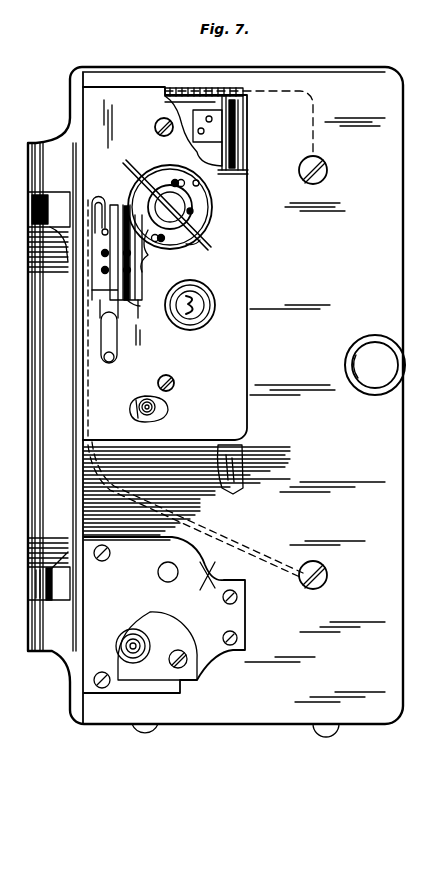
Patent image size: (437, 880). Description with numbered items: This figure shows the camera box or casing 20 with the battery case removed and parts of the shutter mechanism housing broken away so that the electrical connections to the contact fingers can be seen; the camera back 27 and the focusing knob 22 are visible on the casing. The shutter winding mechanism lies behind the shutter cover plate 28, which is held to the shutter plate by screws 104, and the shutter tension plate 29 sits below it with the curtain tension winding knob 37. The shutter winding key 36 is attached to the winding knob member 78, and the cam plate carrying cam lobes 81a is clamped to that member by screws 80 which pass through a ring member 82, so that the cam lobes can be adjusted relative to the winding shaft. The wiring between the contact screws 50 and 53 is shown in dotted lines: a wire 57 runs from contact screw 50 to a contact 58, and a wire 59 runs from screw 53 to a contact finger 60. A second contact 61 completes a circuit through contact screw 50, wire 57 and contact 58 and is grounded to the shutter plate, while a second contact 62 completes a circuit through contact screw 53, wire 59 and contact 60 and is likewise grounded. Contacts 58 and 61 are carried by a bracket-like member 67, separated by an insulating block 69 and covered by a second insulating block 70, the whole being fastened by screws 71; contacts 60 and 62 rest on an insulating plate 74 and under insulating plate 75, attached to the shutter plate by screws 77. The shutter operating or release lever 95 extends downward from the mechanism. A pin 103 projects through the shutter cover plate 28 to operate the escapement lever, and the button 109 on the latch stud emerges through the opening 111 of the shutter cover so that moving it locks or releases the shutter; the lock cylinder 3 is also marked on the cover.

The lock cylinder 3 is at (186, 431).
The camera box or casing 20 is at (129, 74).
The focusing knob 22 is at (376, 378).
The camera back 27 is at (40, 248).
The shutter cover plate 28 is at (84, 94).
The shutter tension plate 29 is at (164, 615).
The shutter winding key 36 is at (128, 176).
The curtain tension winding knob 37 is at (133, 630).
The contact screw 50 is at (327, 168).
The contact screw 53 is at (327, 573).
The wire 57 is at (318, 103).
The contact 58 is at (238, 150).
The wire 59 is at (86, 200).
The contact finger 60 is at (100, 296).
The second contact 61 is at (210, 154).
The second contact 62 is at (145, 311).
The bracket-like member 67 is at (198, 128).
The insulating block 69 is at (246, 160).
The second insulating block 70 is at (240, 104).
The screws 71 is at (240, 118).
The insulating plate 74 is at (130, 333).
The insulating plate 75 is at (108, 282).
The screws 77 is at (150, 282).
The winding knob member 78 is at (205, 232).
The screws 80 is at (168, 211).
The cam lobes or swells 81a is at (198, 183).
The ring member 82 is at (196, 214).
The shutter operating or release lever 95 is at (237, 494).
The pin 103 is at (112, 362).
The screws 104 is at (156, 129).
The button 109 is at (157, 414).
The opening 111 is at (132, 416).